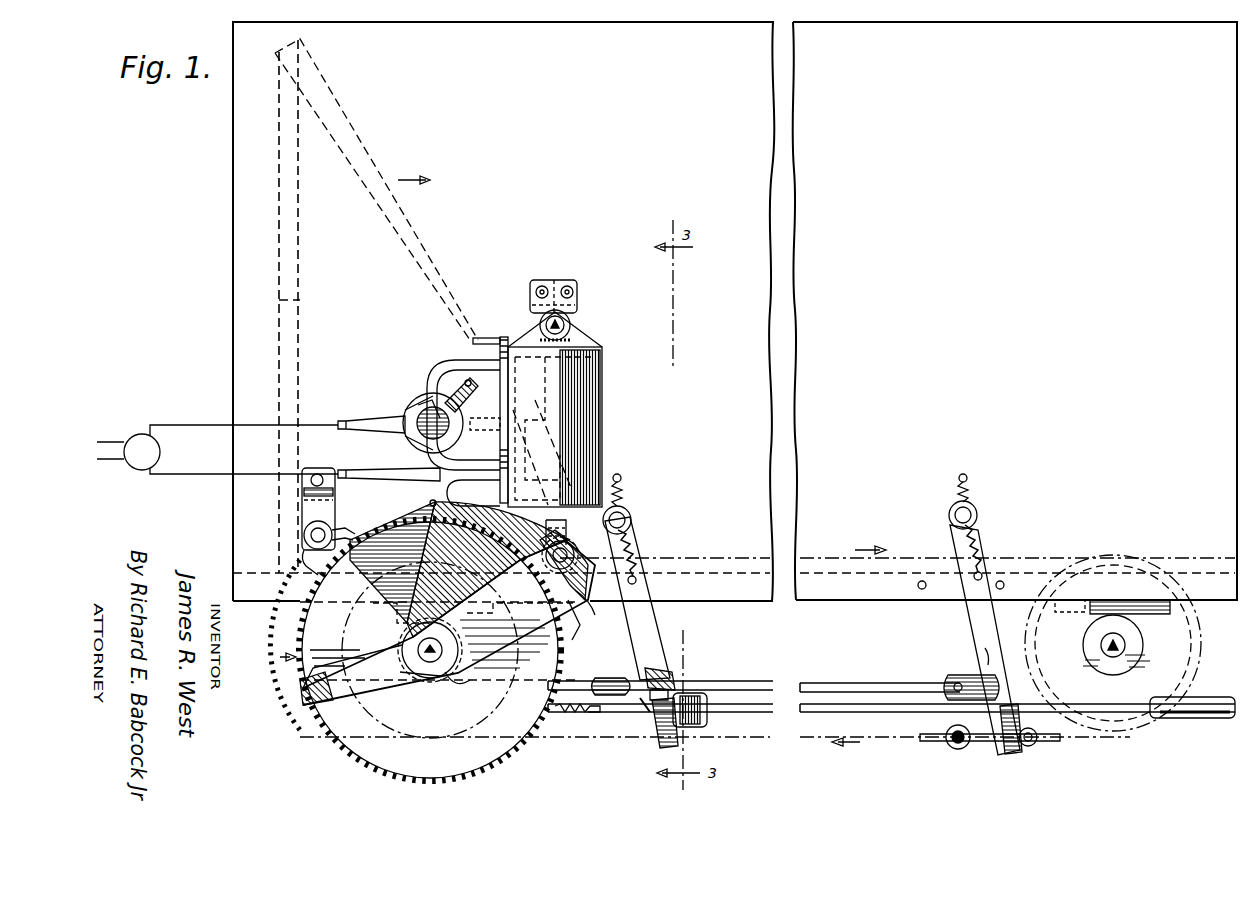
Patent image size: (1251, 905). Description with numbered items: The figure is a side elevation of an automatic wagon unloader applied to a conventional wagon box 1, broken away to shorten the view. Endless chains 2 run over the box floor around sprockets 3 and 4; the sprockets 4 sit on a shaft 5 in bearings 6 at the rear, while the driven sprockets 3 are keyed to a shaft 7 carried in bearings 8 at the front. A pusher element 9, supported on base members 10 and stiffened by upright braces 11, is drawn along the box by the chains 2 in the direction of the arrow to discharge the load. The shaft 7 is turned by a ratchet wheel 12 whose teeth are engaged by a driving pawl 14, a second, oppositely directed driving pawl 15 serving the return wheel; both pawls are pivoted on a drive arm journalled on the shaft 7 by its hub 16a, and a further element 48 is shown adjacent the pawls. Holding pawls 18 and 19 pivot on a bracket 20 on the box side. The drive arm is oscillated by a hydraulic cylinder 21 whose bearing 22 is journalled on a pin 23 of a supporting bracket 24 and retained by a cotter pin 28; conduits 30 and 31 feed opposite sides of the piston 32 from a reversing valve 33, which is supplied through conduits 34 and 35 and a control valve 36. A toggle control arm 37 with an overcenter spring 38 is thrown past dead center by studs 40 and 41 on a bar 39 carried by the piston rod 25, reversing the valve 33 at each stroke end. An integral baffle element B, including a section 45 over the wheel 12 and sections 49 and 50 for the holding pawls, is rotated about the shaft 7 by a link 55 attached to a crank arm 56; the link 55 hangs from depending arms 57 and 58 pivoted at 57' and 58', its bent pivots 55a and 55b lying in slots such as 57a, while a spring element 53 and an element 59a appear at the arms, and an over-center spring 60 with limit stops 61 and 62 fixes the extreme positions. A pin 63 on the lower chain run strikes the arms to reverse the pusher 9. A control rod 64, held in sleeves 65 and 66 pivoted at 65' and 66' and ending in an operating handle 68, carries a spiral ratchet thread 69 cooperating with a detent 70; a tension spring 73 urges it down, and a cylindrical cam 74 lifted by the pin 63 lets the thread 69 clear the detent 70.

The wagon box 1 is at (1015, 384).
The chains 2 is at (1030, 558).
The sprockets 3 is at (394, 726).
The sprockets 4 is at (1195, 660).
The shaft 5 is at (1108, 650).
The bearings 6 is at (1088, 627).
The shaft 7 is at (425, 655).
The bearings 8 is at (395, 628).
The pusher element 9 is at (420, 238).
The base members 10 is at (360, 555).
The upright braces 11 is at (300, 298).
The ratchet wheel 12 is at (380, 775).
The driving pawl 14 is at (580, 612).
The driving pawl 15 is at (554, 560).
The hub 16a is at (420, 680).
The holding pawl 18 is at (340, 528).
The holding pawl 19 is at (302, 560).
The bracket 20 is at (300, 505).
The cylinder 21 is at (605, 423).
The bearing 22 is at (575, 338).
The pin 23 is at (568, 316).
The supporting bracket 24 is at (578, 290).
The piston rod 25 is at (552, 458).
The cotter pin 28 is at (566, 326).
The fluid conduit 30 is at (437, 368).
The fluid conduit 31 is at (478, 490).
The piston 32 is at (553, 428).
The reversing valve 33 is at (406, 413).
The supply conduit 34 is at (346, 421).
The exhaust conduit 35 is at (350, 470).
The control valve 36 is at (161, 452).
The toggle control arm 37 is at (462, 380).
The overcenter spring 38 is at (421, 395).
The bar 39 is at (504, 337).
The stud 40 is at (482, 338).
The stud 41 is at (478, 418).
The baffle section 45 is at (433, 505).
The stud 48 is at (582, 621).
The baffle section 49 is at (303, 695).
The baffle section 50 is at (295, 625).
The spring 53 is at (620, 492).
The link 55 is at (852, 683).
The pivot 55a is at (605, 678).
The pivot 55b is at (962, 676).
The crank arm 56 is at (462, 684).
The depending arm 57 is at (652, 598).
The arm pivot 57' is at (638, 538).
The slot 57a is at (668, 672).
The depending arm 58 is at (980, 640).
The arm pivot 58' is at (951, 536).
The link 59a is at (986, 648).
The over-center tension spring 60 is at (966, 494).
The limit stop 61 is at (918, 585).
The limit stop 62 is at (1004, 585).
The pin 63 is at (958, 750).
The control rod 64 is at (815, 713).
The sleeve 65 is at (679, 682).
The sleeve pivot 65' is at (631, 716).
The sleeve 66 is at (1008, 749).
The sleeve pivot 66' is at (1021, 718).
The operating handle 68 is at (1188, 718).
The spiral ratchet thread 69 is at (590, 714).
The detent 70 is at (530, 727).
The tension spring 73 is at (656, 742).
The cylindrical cam 74 is at (707, 720).
The baffle element B is at (276, 658).